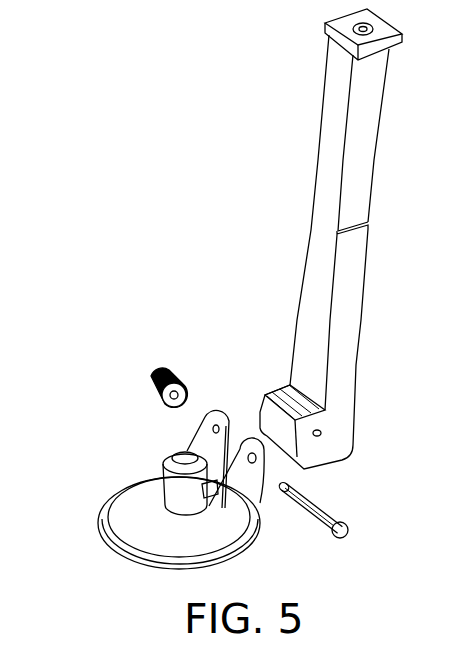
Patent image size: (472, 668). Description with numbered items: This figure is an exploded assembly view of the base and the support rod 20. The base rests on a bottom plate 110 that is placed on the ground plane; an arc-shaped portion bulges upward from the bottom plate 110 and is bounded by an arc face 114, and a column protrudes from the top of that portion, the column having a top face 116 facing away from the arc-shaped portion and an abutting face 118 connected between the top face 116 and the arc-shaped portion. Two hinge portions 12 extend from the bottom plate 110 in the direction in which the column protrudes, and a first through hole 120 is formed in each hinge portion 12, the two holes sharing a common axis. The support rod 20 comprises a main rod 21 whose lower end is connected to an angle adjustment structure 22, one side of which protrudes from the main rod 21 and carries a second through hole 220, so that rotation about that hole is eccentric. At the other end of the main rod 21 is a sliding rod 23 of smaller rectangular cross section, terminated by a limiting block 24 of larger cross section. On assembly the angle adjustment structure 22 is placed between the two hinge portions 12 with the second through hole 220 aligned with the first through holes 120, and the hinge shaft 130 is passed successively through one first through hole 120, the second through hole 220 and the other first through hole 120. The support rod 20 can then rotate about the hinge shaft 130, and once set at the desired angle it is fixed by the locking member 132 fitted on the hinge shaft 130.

The hinge portion 12 is at (254, 495).
The support rod 20 is at (222, 118).
The main rod 21 is at (313, 300).
The angle adjustment structure 22 is at (317, 388).
The sliding rod 23 is at (327, 182).
The limiting block 24 is at (343, 33).
The bottom plate 110 is at (115, 533).
The arc face 114 is at (130, 503).
The top face 116 is at (184, 456).
The abutting face 118 is at (165, 472).
The first through hole 120 is at (212, 428).
The hinge shaft 130 is at (328, 518).
The locking member 132 is at (160, 373).
The second through hole 220 is at (319, 432).